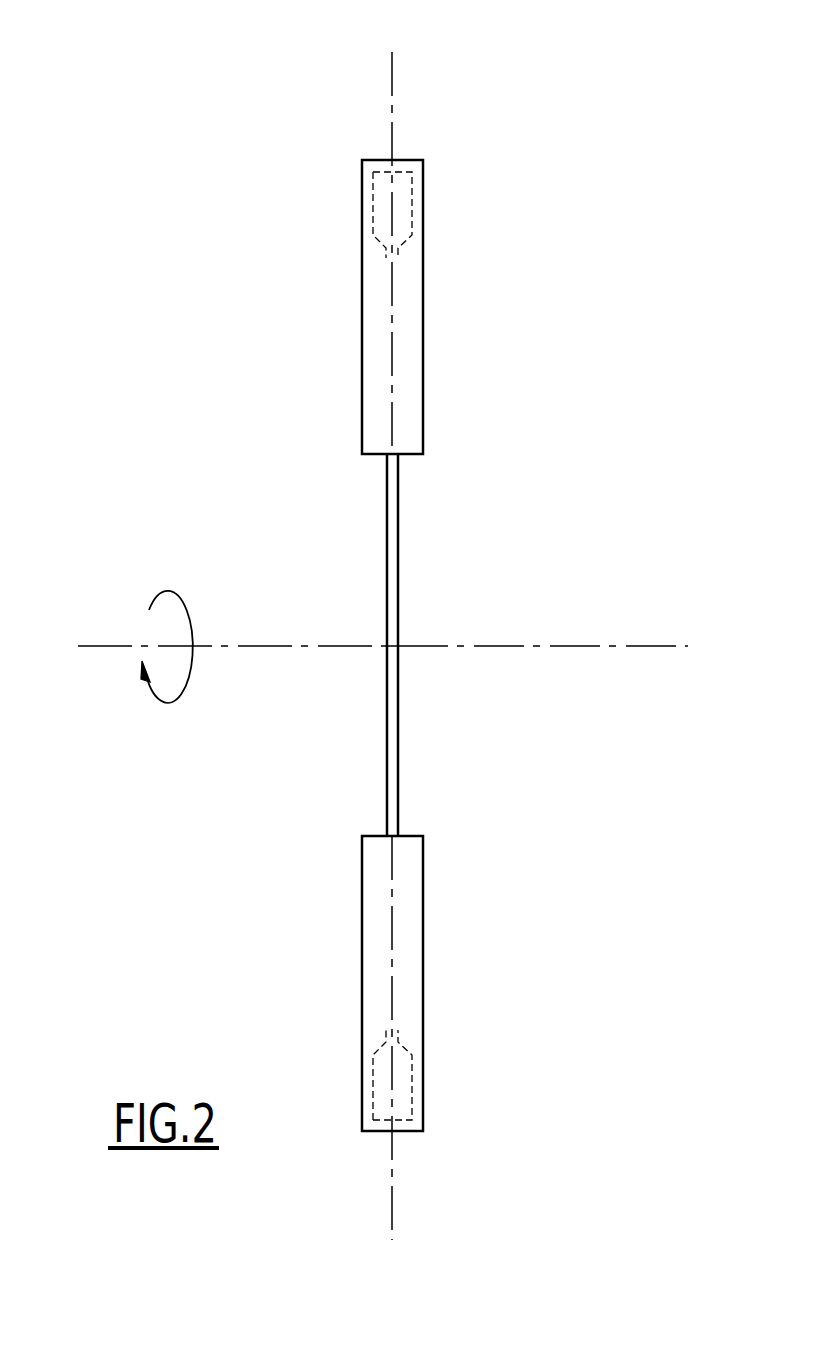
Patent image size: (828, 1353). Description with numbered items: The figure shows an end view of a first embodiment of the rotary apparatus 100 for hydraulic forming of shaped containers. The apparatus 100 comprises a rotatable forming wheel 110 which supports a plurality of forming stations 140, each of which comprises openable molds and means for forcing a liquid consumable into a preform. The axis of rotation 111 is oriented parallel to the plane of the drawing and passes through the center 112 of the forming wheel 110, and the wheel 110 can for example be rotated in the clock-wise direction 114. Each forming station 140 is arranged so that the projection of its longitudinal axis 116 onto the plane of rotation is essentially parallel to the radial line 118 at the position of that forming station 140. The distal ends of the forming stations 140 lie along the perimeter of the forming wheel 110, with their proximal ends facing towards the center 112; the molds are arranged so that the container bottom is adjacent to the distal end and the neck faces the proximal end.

The rotary apparatus 100 is at (195, 313).
The rotatable forming wheel 110 is at (399, 543).
The axis of rotation 111 is at (618, 647).
The center 112 is at (398, 646).
The clock-wise direction 114 is at (168, 702).
The longitudinal axis 116 is at (468, 631).
The radial line 118 is at (392, 98).
The forming station 140 is at (397, 202).